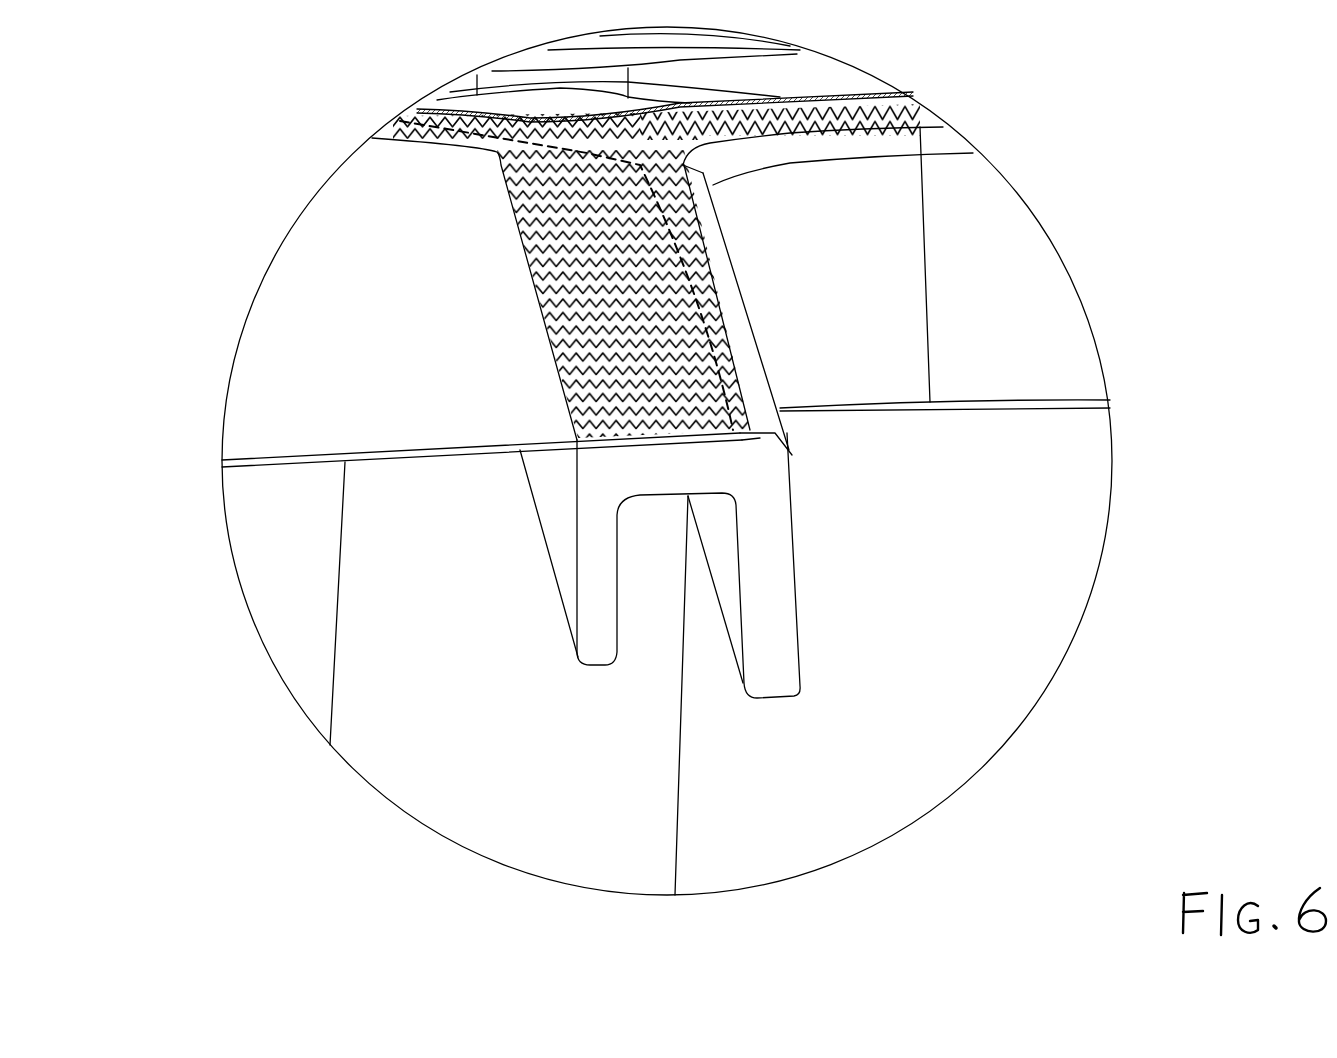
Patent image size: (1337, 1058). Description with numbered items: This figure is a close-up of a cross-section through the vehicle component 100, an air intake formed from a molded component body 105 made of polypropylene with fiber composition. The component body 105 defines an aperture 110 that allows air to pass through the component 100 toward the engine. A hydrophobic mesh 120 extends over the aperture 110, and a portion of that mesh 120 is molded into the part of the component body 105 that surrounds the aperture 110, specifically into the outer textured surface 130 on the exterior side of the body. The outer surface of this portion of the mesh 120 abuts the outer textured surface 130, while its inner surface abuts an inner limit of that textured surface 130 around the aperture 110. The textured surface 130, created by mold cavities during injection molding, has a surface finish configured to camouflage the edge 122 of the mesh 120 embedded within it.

The vehicle component 100 is at (1007, 353).
The component body 105 is at (790, 650).
The aperture 110 is at (420, 550).
The mesh 120 is at (337, 333).
The edge 122 is at (740, 437).
The outer textured surface 130 is at (925, 108).